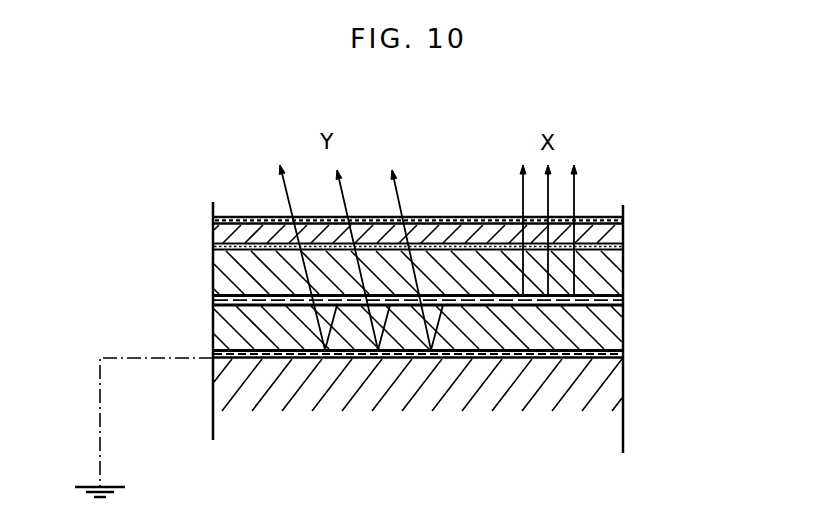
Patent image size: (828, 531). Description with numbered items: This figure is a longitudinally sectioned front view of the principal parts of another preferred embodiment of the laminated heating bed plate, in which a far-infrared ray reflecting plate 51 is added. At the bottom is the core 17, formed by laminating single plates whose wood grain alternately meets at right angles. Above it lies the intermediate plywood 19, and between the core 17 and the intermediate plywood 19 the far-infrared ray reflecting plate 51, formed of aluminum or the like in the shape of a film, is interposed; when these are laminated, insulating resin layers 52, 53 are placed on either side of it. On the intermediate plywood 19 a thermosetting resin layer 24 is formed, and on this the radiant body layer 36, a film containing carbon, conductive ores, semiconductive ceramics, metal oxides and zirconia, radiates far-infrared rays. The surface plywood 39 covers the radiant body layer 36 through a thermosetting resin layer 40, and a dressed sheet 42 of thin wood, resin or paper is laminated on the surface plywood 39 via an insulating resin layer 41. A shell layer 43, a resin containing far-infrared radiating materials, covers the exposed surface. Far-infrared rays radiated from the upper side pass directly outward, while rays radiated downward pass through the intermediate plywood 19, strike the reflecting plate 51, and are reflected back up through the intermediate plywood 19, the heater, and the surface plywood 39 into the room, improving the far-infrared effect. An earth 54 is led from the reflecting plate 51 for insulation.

The core 17 is at (232, 372).
The intermediate plywood 19 is at (233, 318).
The thermosetting resin layer 24 is at (624, 328).
The radiant body layer 36 is at (620, 281).
The surface plywood 39 is at (223, 265).
The thermosetting resin layer 40 is at (224, 292).
The insulating resin layer 41 is at (463, 217).
The dressed sheet 42 is at (620, 237).
The shell layer 43 is at (603, 217).
The far-infrared ray reflecting plate 51 is at (505, 365).
The insulating resin layer 52 is at (582, 364).
The insulating resin layer 53 is at (625, 346).
The earth 54 is at (98, 412).